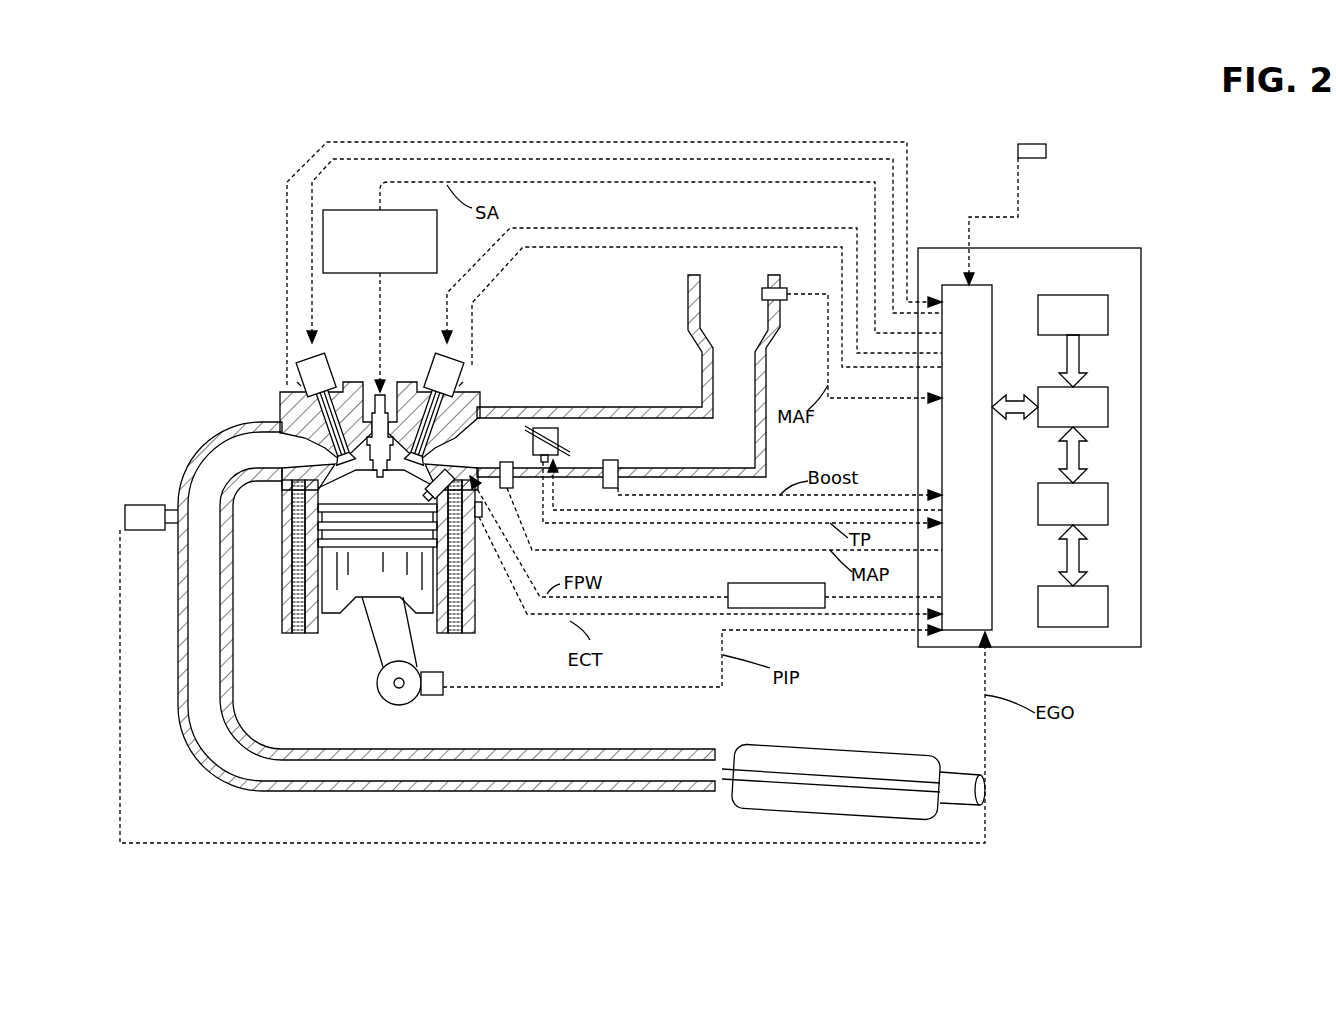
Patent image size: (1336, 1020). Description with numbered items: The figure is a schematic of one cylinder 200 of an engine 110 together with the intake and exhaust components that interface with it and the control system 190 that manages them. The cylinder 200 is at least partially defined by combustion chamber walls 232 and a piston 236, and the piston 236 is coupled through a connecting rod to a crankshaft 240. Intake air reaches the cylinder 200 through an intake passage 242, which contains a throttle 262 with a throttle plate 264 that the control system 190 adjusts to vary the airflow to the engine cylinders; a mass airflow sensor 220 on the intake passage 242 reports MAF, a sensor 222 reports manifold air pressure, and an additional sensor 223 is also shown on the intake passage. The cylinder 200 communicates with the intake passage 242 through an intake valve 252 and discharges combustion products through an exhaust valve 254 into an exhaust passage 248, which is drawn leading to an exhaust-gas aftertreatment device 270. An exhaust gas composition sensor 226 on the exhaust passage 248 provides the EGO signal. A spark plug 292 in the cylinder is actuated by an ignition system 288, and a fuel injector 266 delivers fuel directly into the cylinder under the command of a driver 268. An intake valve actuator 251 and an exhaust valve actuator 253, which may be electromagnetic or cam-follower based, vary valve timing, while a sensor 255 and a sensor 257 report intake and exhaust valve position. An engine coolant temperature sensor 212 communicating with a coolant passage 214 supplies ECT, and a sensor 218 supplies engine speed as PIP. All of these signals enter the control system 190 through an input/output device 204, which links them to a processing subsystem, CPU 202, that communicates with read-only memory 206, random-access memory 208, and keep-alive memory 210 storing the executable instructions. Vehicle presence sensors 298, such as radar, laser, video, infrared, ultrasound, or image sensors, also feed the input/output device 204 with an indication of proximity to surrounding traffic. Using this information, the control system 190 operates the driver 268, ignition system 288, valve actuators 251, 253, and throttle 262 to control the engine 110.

The engine 110 is at (214, 336).
The control system 190 is at (1132, 262).
The cylinder 200 is at (368, 581).
The processing subsystem (CPU) 202 is at (1108, 405).
The input/output device 204 is at (992, 297).
The read-only memory (ROM) 206 is at (1108, 315).
The random-access memory (RAM) 208 is at (1108, 505).
The keep-alive memory (KAM) 210 is at (1108, 607).
The engine coolant temperature sensor 212 is at (480, 517).
The coolant passage 214 is at (478, 617).
The engine speed sensor 218 is at (433, 697).
The mass airflow sensor 220 is at (783, 286).
The manifold air pressure sensor 222 is at (512, 490).
The boost pressure sensor 223 is at (603, 480).
The exhaust gas composition sensor 226 is at (125, 507).
The combustion chamber walls 232 is at (327, 623).
The piston 236 is at (360, 583).
The crankshaft 240 is at (393, 705).
The intake passage 242 is at (720, 317).
The exhaust passage 248 is at (237, 457).
The intake valve actuator 251 is at (426, 382).
The intake valve 252 is at (400, 455).
The exhaust valve actuator 253 is at (302, 382).
The exhaust valve 254 is at (308, 445).
The intake valve position sensor 255 is at (463, 373).
The exhaust valve position sensor 257 is at (297, 382).
The throttle 262 is at (548, 427).
The throttle plate 264 is at (527, 426).
The fuel injector 266 is at (447, 473).
The driver 268 is at (730, 583).
The emission control device 270 is at (900, 750).
The ignition system 288 is at (340, 210).
The spark plug 292 is at (373, 425).
The vehicle presence sensors 298 is at (1046, 151).